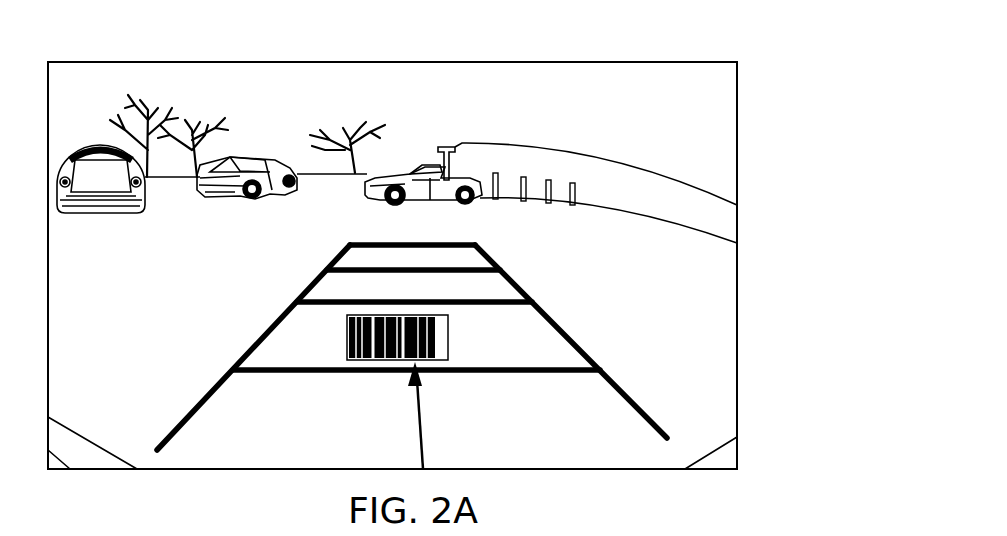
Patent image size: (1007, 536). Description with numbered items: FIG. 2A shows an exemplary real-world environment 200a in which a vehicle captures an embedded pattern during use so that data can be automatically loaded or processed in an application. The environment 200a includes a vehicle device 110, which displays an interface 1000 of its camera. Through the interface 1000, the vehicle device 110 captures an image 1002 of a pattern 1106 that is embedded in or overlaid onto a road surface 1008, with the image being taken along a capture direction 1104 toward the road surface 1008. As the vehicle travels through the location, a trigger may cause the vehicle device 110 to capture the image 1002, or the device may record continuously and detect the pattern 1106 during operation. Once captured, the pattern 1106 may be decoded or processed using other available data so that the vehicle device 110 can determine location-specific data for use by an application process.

The vehicle device 110 is at (567, 62).
The environment 200a is at (785, 53).
The interface 1000 is at (392, 267).
The image 1002 is at (632, 153).
The road surface 1008 is at (238, 268).
The pattern 1106 is at (450, 335).
The capture direction 1104 is at (422, 417).